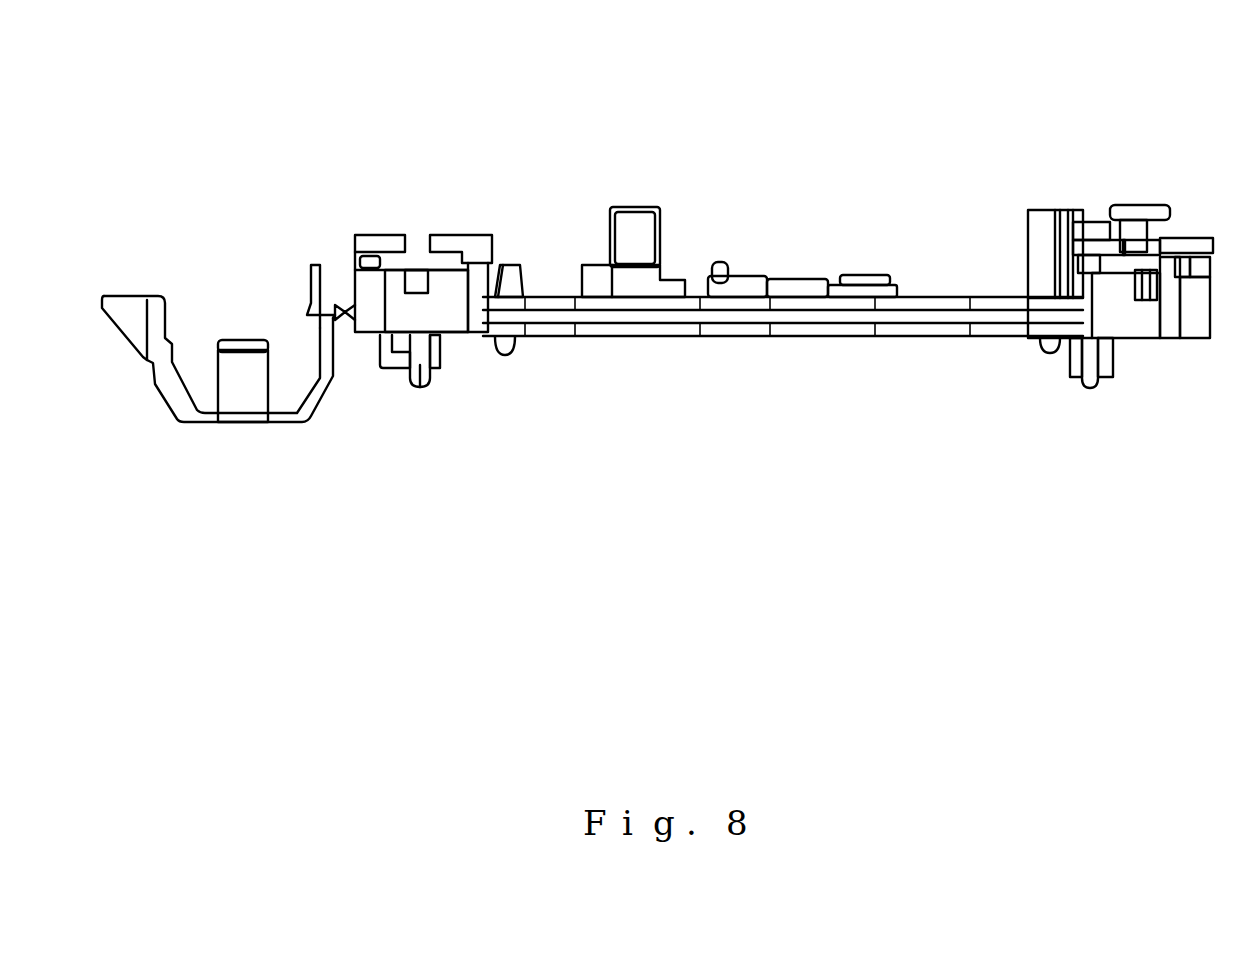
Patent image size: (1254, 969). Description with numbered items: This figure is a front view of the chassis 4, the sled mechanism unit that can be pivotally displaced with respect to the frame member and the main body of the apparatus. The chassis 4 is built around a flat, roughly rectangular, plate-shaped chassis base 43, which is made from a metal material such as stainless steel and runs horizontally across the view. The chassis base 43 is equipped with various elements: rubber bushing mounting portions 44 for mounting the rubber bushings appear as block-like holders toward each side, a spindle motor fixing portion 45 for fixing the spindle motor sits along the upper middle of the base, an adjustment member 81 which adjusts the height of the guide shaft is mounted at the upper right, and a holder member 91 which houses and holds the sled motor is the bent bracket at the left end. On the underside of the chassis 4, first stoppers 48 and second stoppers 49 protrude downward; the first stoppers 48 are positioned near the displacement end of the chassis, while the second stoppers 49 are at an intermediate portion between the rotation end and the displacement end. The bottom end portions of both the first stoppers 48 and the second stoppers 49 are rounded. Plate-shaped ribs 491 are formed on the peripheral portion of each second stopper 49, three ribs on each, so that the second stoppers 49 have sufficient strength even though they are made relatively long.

The chassis 4 is at (784, 115).
The chassis base 43 is at (653, 317).
The rubber bushing mounting portion 44 is at (420, 267).
The spindle motor fixing portion 45 is at (755, 300).
The first stopper 48 is at (513, 355).
The second stopper 49 is at (420, 387).
The rib 491 is at (440, 362).
The adjustment member 81 is at (1110, 196).
The holder member 91 is at (279, 430).